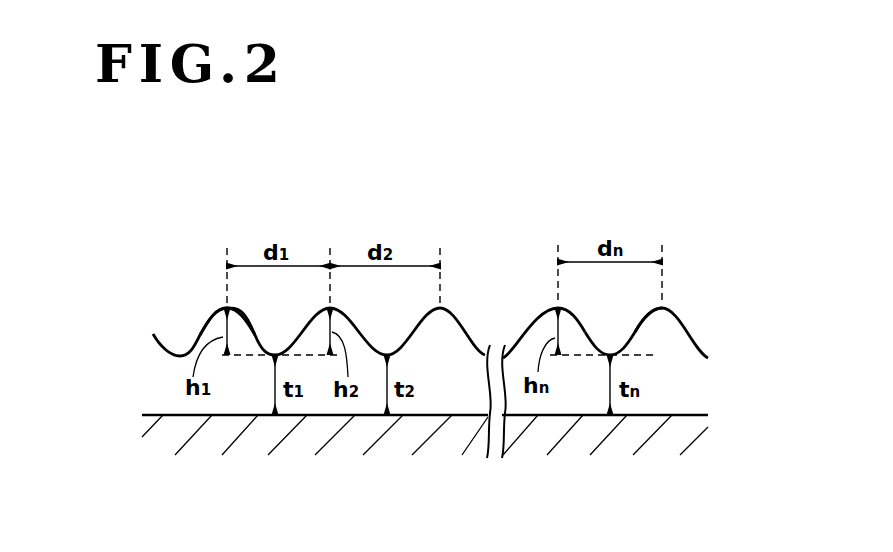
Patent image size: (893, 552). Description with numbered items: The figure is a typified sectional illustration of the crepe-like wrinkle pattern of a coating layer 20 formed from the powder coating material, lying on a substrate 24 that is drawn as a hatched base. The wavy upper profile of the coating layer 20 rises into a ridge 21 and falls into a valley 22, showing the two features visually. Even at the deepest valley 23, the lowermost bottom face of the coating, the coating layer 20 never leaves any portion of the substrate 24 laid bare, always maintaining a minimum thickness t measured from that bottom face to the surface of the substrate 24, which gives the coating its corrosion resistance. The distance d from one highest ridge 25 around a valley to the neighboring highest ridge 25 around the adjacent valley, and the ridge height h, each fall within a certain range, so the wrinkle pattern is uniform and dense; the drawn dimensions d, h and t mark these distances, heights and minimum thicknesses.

The coating layer 20 is at (170, 382).
The ridge 21 is at (215, 328).
The valley 22 is at (182, 347).
The deepest valley 23 is at (611, 355).
The substrate 24 is at (665, 438).
The highest ridge 25 is at (665, 305).